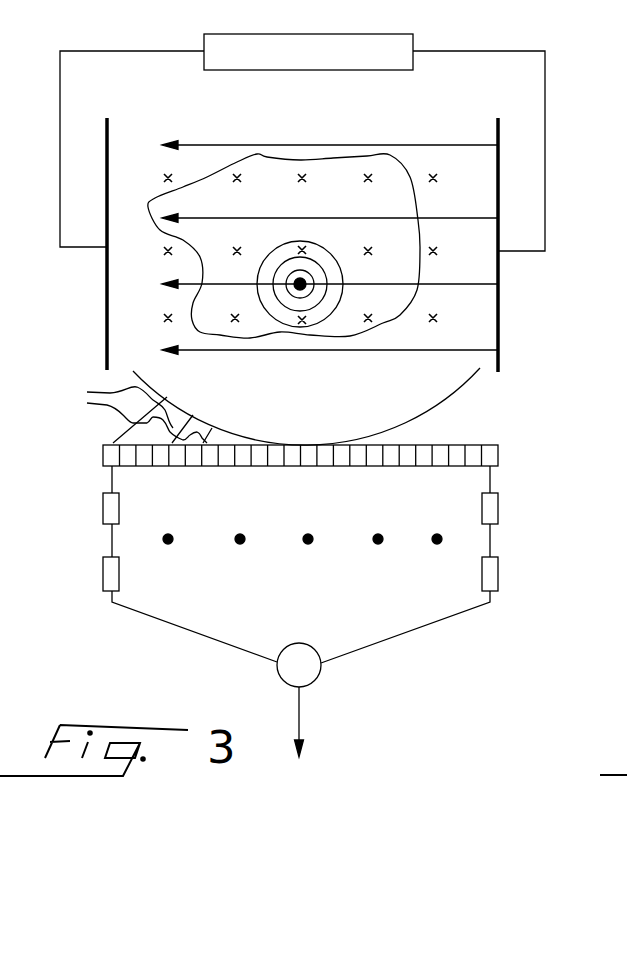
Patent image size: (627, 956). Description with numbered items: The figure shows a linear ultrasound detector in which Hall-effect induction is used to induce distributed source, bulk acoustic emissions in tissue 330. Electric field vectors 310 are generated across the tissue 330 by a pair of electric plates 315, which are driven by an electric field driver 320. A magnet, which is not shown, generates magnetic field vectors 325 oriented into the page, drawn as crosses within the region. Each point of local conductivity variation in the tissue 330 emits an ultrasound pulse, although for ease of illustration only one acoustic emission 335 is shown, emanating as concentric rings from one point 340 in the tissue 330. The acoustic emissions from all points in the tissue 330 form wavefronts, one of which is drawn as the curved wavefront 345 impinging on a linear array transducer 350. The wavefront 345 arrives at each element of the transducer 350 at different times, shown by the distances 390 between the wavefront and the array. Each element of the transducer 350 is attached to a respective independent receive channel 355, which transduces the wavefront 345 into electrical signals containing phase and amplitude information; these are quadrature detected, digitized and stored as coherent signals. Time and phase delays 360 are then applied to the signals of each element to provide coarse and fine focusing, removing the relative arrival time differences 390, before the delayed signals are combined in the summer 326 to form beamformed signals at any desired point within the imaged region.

The electric field vectors 310 is at (398, 145).
The electric plates 315 is at (107, 322).
The electric field driver 320 is at (405, 70).
The magnetic field vectors 325 is at (168, 176).
The summer 326 is at (318, 677).
The tissue 330 is at (266, 156).
The acoustic emission 335 is at (340, 300).
The point 340 is at (305, 280).
The wavefront 345 is at (468, 393).
The linear array transducer 350 is at (498, 455).
The receive channel 355 is at (103, 508).
The time and phase delays 360 is at (103, 578).
The distances 390 is at (120, 413).